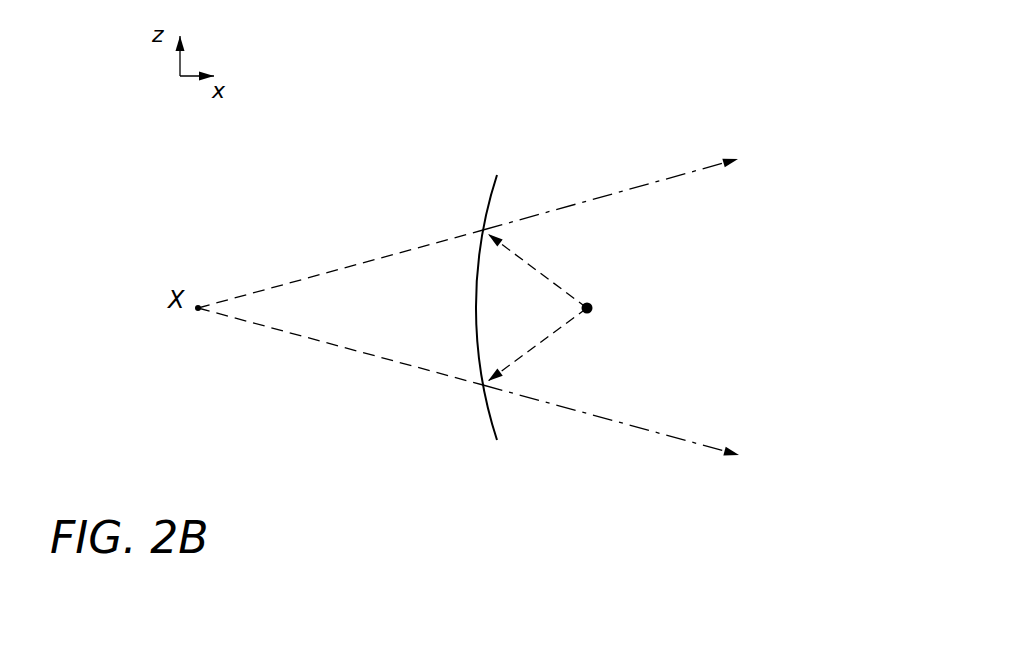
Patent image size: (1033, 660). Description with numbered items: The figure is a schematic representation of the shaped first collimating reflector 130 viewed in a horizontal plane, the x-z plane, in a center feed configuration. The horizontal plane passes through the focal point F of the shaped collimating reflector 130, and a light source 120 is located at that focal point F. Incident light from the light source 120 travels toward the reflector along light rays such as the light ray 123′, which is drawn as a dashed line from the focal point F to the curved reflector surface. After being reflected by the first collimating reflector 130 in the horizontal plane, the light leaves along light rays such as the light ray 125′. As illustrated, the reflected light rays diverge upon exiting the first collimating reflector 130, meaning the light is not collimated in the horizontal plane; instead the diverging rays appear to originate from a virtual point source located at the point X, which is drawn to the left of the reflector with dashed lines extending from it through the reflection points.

The shaped first collimating reflector 130 is at (472, 184).
The light source 120 is at (592, 312).
The light ray 123′ is at (538, 343).
The light ray 125′ is at (675, 437).